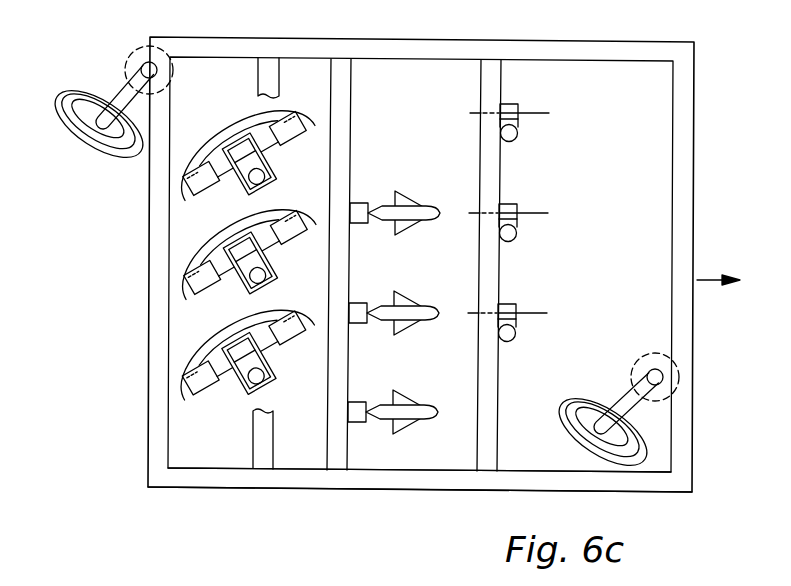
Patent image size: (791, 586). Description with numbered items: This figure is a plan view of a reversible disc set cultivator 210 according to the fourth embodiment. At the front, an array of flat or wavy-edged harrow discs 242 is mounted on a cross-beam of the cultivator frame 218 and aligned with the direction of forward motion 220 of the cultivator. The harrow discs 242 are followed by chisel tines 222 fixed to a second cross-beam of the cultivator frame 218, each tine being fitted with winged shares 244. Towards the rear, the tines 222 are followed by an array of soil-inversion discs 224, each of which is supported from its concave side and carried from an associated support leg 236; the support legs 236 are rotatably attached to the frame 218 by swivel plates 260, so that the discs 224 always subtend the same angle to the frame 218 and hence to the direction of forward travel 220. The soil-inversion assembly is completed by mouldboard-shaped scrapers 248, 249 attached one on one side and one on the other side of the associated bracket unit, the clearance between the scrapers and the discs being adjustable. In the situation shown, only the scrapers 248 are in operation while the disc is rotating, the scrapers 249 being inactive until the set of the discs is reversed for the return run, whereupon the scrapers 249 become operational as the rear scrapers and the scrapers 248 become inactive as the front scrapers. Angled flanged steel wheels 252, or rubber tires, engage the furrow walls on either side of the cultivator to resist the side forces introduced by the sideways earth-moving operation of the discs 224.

The reversible disc set cultivator 210 is at (635, 32).
The cultivator frame 218 is at (318, 480).
The direction of forward motion 220 is at (704, 279).
The chisel tines 222 is at (447, 166).
The soil-inversion discs 224 is at (220, 138).
The support leg 236 is at (298, 278).
The harrow discs 242 is at (540, 113).
The winged shares 244 is at (435, 222).
The scrapers 248 is at (192, 197).
The scrapers 249 is at (305, 140).
The angled flanged steel wheels 252 is at (93, 150).
The swivel plates 260 is at (250, 296).